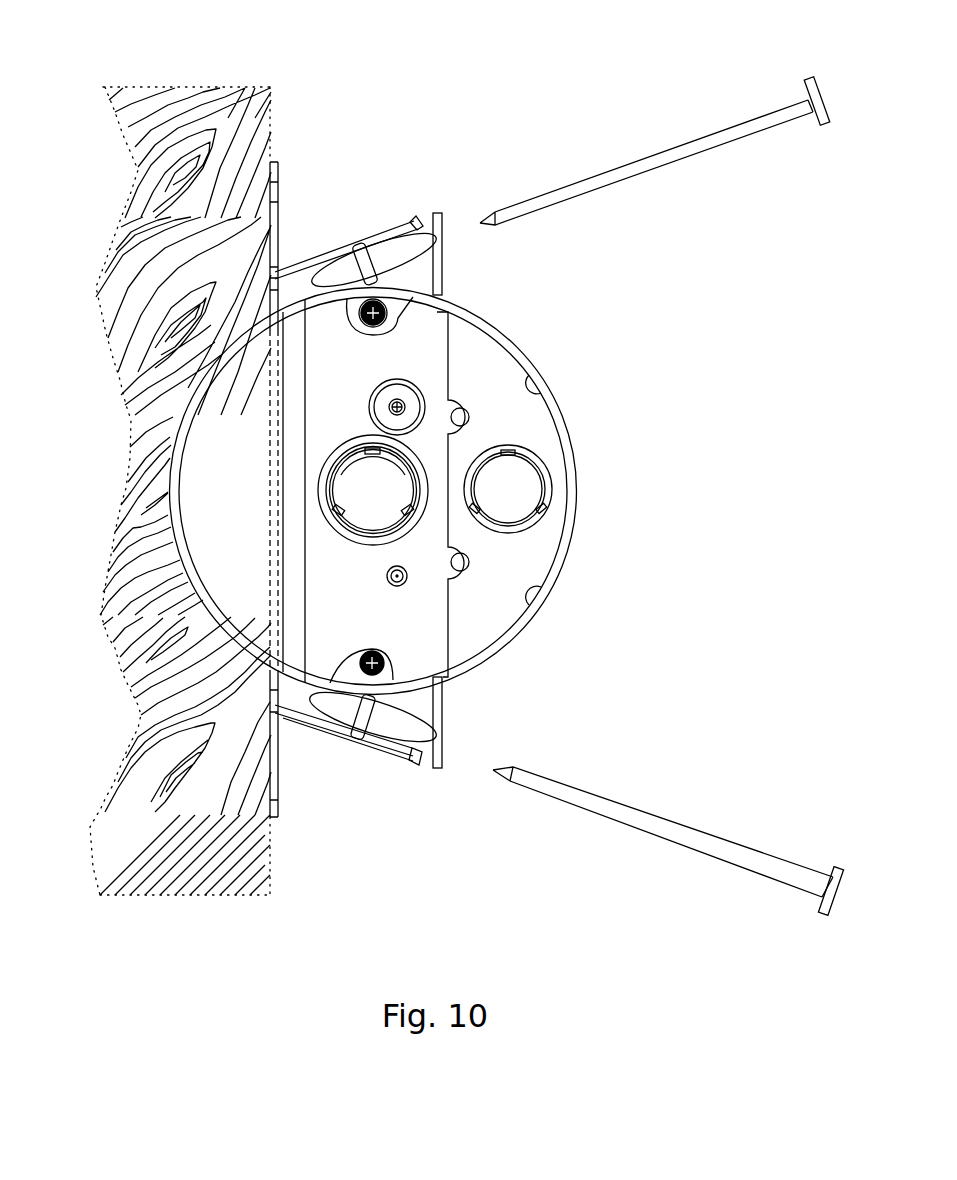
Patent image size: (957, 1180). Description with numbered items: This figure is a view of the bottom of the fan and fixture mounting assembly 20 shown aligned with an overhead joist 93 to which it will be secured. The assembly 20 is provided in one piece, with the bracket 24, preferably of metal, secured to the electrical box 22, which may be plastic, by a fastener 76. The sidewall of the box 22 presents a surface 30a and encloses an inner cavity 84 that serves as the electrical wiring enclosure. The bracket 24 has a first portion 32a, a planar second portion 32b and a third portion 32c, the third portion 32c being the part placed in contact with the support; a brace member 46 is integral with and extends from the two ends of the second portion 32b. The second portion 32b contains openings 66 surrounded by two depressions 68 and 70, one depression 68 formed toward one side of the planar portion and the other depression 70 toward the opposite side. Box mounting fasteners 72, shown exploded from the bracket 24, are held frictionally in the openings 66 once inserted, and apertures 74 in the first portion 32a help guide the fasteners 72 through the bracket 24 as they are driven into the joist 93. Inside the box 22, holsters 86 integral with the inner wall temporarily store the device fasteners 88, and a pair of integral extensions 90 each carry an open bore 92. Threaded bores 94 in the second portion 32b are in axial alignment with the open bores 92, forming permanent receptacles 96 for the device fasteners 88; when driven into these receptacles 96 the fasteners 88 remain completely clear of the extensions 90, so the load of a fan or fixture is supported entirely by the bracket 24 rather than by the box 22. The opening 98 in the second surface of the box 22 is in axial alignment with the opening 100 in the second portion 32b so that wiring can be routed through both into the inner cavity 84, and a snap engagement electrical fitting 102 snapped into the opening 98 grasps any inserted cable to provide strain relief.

The fan and fixture mounting assembly 20 is at (716, 306).
The electrical box 22 is at (563, 417).
The bracket 24 is at (440, 213).
The surface 30a is at (369, 567).
The first portion 32a is at (440, 717).
The second portion 32b is at (435, 258).
The third portion 32c is at (270, 493).
The brace member 46 is at (352, 737).
The openings 66 is at (357, 243).
The depression 68 is at (335, 273).
The depression 70 is at (398, 252).
The box mounting fasteners 72 is at (672, 822).
The apertures 74 is at (437, 747).
The fastener 76 is at (399, 399).
The inner cavity 84 is at (543, 548).
The holsters 86 is at (470, 571).
The device fasteners 88 is at (362, 657).
The integral extensions 90 is at (366, 327).
The open bore 92 is at (359, 315).
The overhead joist 93 is at (238, 110).
The threaded bores 94 is at (402, 295).
The permanent receptacles 96 is at (398, 660).
The opening 98 is at (408, 522).
The opening 100 is at (415, 452).
The snap engagement electrical fitting 102 is at (392, 526).